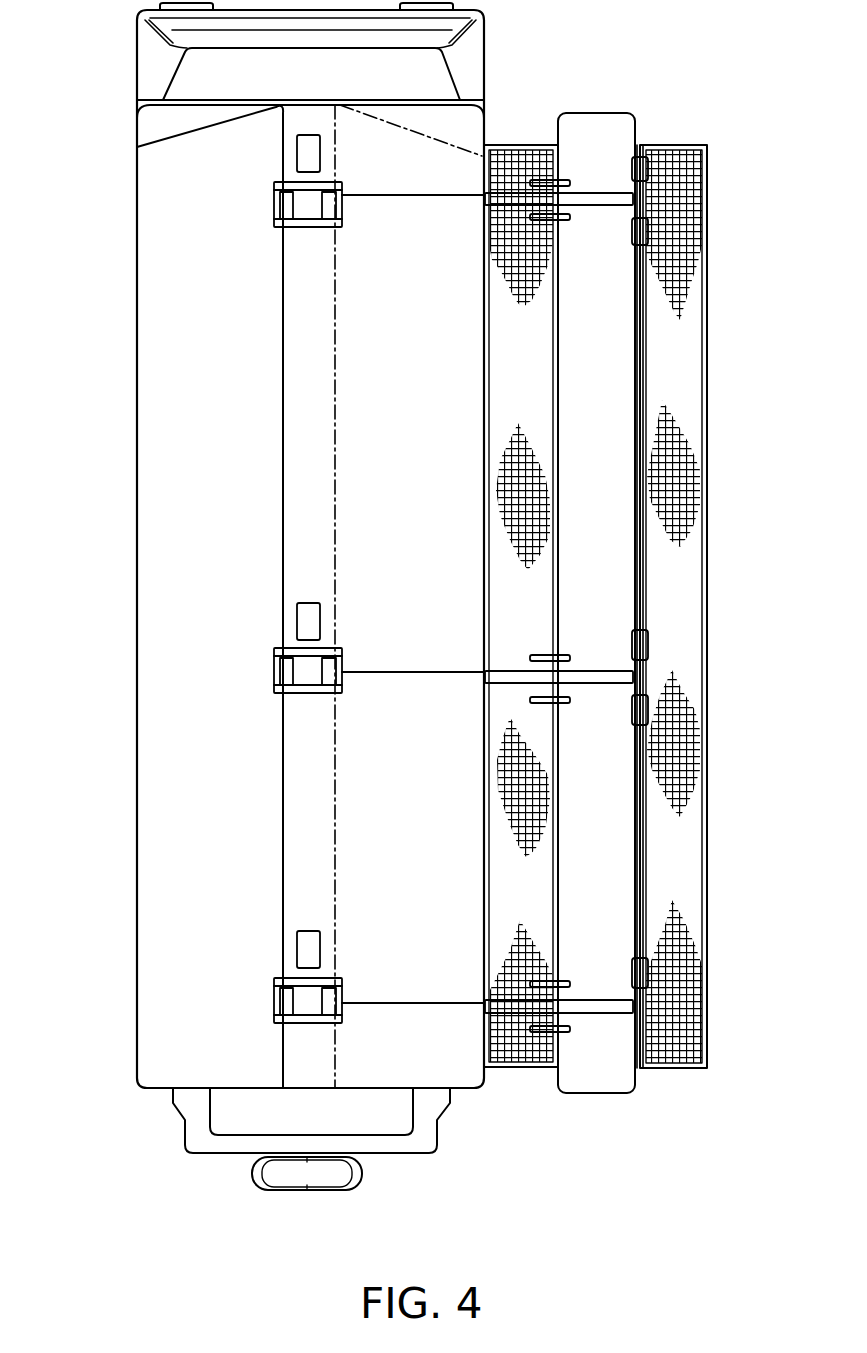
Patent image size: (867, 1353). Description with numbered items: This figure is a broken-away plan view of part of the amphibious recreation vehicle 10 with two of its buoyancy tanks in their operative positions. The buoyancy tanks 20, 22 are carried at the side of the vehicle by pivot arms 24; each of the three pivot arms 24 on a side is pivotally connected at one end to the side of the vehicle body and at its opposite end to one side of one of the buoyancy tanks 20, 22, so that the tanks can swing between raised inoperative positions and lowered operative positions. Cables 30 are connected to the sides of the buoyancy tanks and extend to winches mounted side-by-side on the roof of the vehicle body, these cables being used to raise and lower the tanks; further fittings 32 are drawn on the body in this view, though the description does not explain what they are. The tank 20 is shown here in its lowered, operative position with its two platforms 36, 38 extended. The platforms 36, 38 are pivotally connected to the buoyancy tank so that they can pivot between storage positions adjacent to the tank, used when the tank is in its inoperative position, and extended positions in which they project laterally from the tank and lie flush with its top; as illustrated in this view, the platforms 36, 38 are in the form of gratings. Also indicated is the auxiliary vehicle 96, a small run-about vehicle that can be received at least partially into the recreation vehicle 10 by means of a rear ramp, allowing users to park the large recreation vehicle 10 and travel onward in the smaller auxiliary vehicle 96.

The amphibious recreation vehicle 10 is at (105, 1003).
The buoyancy tank 20 is at (597, 368).
The buoyancy tank 22 is at (224, 475).
The pivot arms 24 is at (597, 195).
The cables 30 is at (402, 197).
The latch 32 is at (321, 220).
The platform 36 is at (672, 340).
The platform 38 is at (528, 583).
The auxiliary vehicle 96 is at (157, 1162).